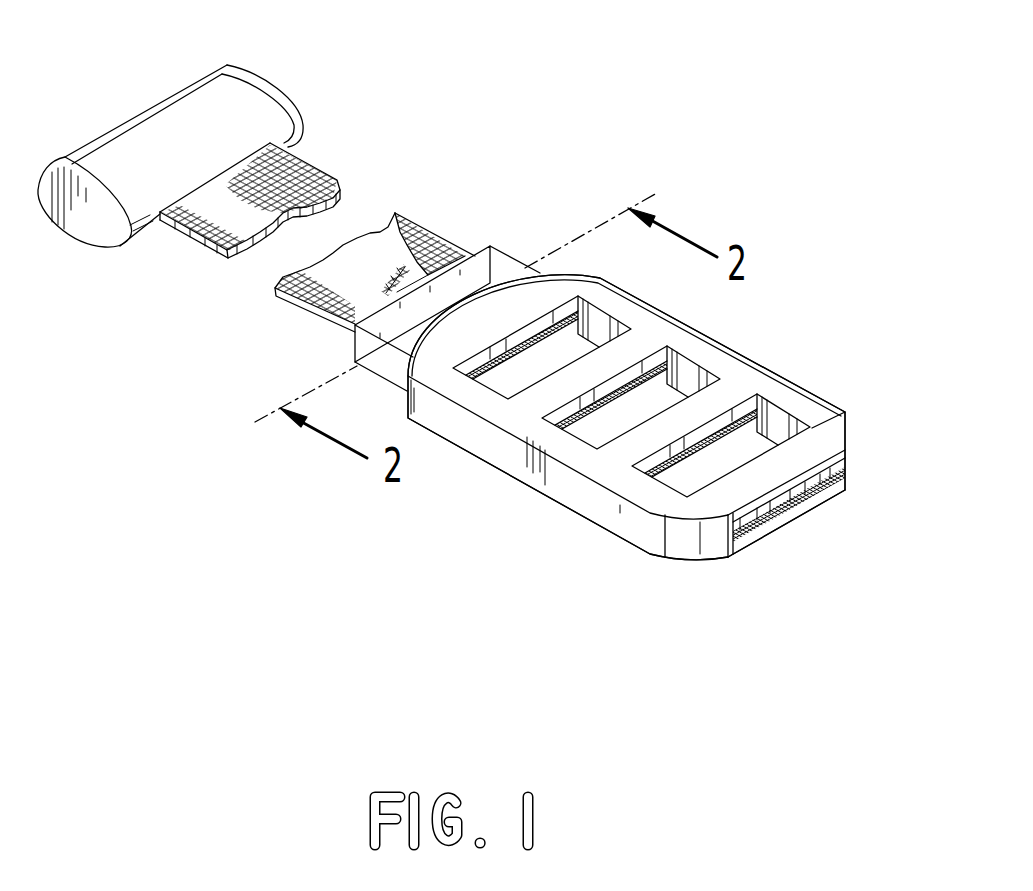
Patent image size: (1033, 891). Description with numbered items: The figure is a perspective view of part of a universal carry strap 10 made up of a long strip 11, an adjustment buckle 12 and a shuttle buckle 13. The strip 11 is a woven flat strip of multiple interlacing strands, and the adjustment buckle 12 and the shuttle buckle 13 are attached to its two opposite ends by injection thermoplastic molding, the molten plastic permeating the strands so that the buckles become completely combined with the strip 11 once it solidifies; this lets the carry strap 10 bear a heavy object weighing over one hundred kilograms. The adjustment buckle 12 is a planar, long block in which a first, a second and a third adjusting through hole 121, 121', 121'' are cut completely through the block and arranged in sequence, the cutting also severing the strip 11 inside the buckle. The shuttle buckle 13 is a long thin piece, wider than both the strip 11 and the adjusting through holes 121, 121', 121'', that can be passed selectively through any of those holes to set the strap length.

The universal carry strap 10 is at (845, 216).
The long strip 11 is at (412, 255).
The adjustment buckle 12 is at (620, 510).
The shuttle buckle 13 is at (273, 110).
The first adjusting through hole 121 is at (575, 328).
The second adjusting through hole 121' is at (675, 366).
The third adjusting through hole 121'' is at (769, 417).